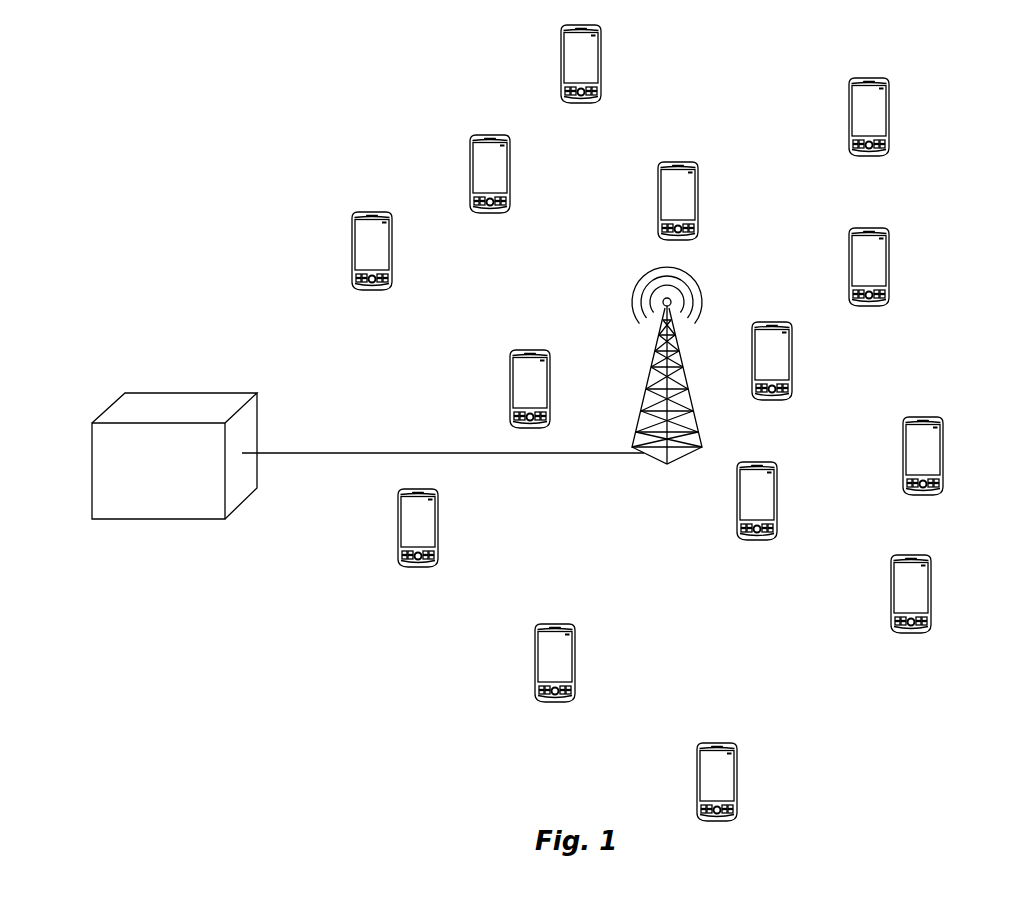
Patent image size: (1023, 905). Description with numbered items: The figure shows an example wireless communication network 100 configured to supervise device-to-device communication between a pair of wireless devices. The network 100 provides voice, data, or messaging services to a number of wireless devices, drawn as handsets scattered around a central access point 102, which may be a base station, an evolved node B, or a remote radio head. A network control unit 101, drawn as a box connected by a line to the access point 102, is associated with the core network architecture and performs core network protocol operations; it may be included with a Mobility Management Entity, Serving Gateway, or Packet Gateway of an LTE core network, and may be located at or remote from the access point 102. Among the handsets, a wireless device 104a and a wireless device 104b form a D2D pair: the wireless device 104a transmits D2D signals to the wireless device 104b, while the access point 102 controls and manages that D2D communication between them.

The wireless communication network 100 is at (224, 80).
The network control unit 101 is at (173, 486).
The access point 102 is at (645, 390).
The wireless device 104a is at (777, 498).
The wireless device 104b is at (535, 662).